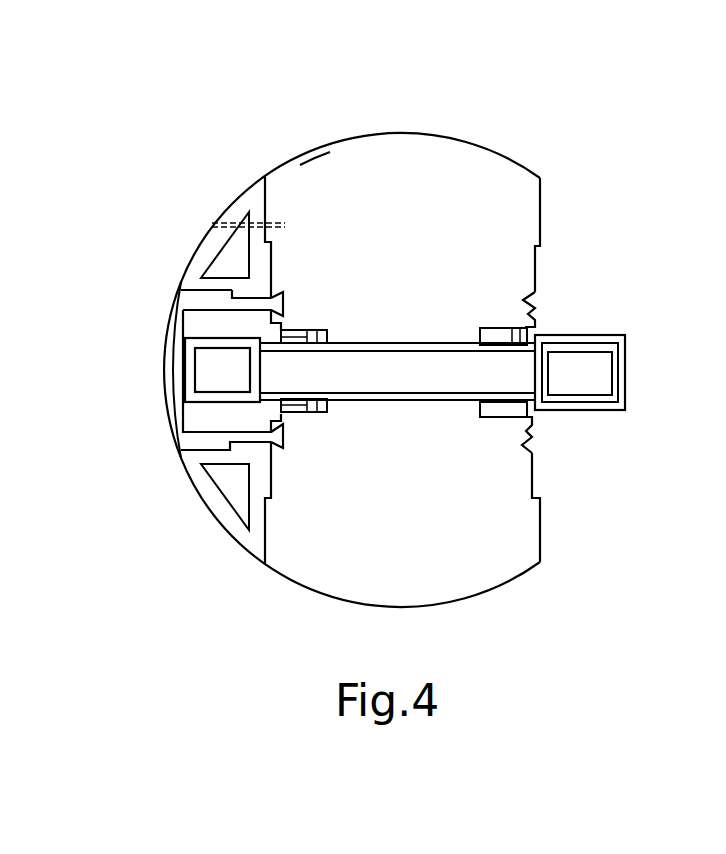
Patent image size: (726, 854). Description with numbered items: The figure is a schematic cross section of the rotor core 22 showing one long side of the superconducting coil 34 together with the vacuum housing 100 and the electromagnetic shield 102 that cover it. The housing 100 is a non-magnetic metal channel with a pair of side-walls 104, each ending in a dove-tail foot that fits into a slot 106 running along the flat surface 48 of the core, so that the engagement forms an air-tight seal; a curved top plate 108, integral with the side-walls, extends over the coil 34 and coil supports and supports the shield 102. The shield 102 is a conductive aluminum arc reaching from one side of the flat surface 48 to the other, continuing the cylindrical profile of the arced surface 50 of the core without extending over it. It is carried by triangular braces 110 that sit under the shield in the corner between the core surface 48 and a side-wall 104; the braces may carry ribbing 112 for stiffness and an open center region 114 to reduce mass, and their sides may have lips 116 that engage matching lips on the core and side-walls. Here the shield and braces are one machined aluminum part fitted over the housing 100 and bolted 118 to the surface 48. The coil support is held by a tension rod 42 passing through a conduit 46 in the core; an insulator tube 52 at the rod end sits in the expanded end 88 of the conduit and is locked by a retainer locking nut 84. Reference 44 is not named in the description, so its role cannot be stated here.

The core 22 is at (415, 160).
The arced surface 50 is at (315, 157).
The flat surface 48 is at (542, 206).
The slot 106 is at (539, 302).
The conduit 46 is at (537, 324).
The bearing housing 44 is at (593, 337).
The coil 34 is at (596, 378).
The tension rod 42 is at (500, 390).
The open center region 114 is at (243, 400).
The expanded end 88 is at (326, 328).
The insulator tube 52 is at (308, 328).
The retainer locking nut 84 is at (284, 416).
The vacuum housing 100 is at (200, 295).
The side-wall 104 is at (180, 292).
The electromagnetic (EM) shield 102 is at (180, 442).
The top plate 108 is at (172, 362).
The lips 116 is at (259, 258).
The ribbing 112 is at (258, 490).
The triangular brace 110 is at (242, 284).
The bolt 118 is at (205, 225).